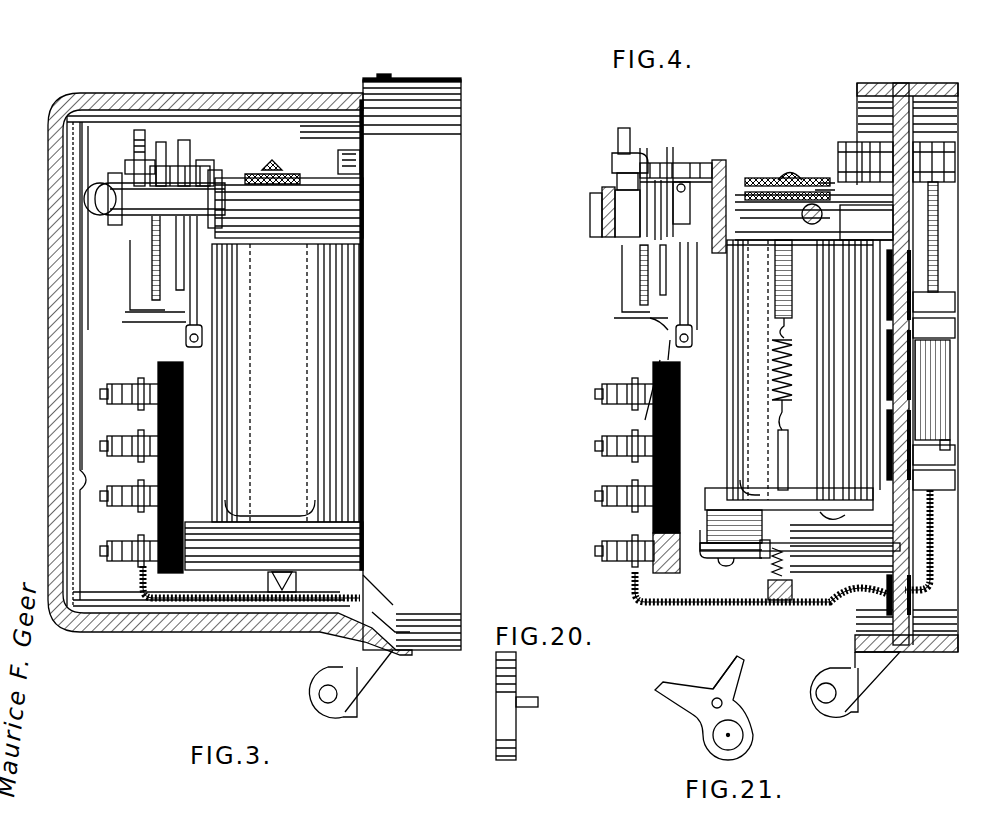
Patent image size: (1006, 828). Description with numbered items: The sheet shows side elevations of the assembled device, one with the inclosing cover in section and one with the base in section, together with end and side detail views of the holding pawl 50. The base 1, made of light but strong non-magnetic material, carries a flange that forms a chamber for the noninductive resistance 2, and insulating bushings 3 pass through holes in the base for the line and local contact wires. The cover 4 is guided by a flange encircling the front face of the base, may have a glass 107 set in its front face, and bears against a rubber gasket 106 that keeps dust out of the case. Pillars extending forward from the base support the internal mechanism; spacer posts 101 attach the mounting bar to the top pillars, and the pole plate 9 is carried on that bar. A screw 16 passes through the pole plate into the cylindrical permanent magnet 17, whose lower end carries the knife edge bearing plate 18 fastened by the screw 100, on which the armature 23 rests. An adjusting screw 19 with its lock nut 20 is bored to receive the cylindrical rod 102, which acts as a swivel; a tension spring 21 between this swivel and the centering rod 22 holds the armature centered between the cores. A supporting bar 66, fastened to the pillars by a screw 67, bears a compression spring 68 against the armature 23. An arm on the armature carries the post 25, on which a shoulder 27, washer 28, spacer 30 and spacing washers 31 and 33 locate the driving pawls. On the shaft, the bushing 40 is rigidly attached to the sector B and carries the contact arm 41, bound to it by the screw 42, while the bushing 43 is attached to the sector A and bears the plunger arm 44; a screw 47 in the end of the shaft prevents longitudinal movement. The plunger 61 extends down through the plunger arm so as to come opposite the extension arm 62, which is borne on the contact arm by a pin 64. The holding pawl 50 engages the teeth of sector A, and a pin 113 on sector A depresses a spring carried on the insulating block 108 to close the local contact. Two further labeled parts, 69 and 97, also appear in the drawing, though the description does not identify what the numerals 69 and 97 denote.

In FIG. 3, the base 1 is at (456, 452).
In FIG. 4, the base 1 is at (958, 282).
In FIG. 4, the noninductive resistance 2 is at (955, 443).
In FIG. 4, the insulating bushings 3 is at (890, 475).
In FIG. 3, the cover 4 is at (160, 628).
In FIG. 4, the pole plate 9 is at (738, 220).
In FIG. 4, the screw 16 is at (825, 185).
In FIG. 4, the cylindrical permanent magnet 17 is at (800, 370).
In FIG. 4, the knife edge bearing plate 18 is at (789, 497).
In FIG. 4, the adjusting screw 19 is at (768, 178).
In FIG. 4, the lock nut 20 is at (745, 190).
In FIG. 4, the tension spring 21 is at (772, 380).
In FIG. 4, the centering rod 22 is at (778, 448).
In FIG. 4, the armature 23 is at (762, 560).
In FIG. 3, the post 25 is at (135, 177).
In FIG. 3, the shoulder 27 is at (262, 170).
In FIG. 3, the washer 28 is at (205, 168).
In FIG. 3, the spacer 30 is at (192, 170).
In FIG. 3, the spacing washer 31 is at (168, 172).
In FIG. 3, the spacing washer 33 is at (160, 170).
In FIG. 4, the bushing 40 is at (696, 283).
In FIG. 4, the contact arm 41 is at (690, 328).
In FIG. 4, the screw 42 is at (690, 182).
In FIG. 4, the bushing 43 is at (658, 314).
In FIG. 4, the plunger arm 44 is at (650, 165).
In FIG. 4, the screw 47 is at (622, 240).
In FIG. 20, the holding pawl 50 is at (496, 668).
In FIG. 21, the holding pawl 50 is at (704, 728).
In FIG. 4, the plunger 61 is at (620, 288).
In FIG. 4, the extension arm 62 is at (668, 355).
In FIG. 4, the pin 64 is at (690, 345).
In FIG. 4, the supporting bar 66 is at (786, 570).
In FIG. 4, the screw 67 is at (780, 600).
In FIG. 4, the compression spring 68 is at (795, 555).
In FIG. 4, the terminal block 69 is at (666, 565).
In FIG. 4, the contact strip 97 is at (652, 411).
In FIG. 4, the screw 100 is at (900, 520).
In FIG. 4, the spacer posts 101 is at (728, 567).
In FIG. 4, the cylindrical rod 102 is at (806, 158).
In FIG. 3, the rubber gasket 106 is at (392, 655).
In FIG. 4, the rubber gasket 106 is at (860, 105).
In FIG. 3, the glass 107 is at (72, 222).
In FIG. 3, the insulating block 108 is at (140, 240).
In FIG. 3, the pin 113 is at (130, 160).
In FIG. 4, the sector A is at (620, 145).
In FIG. 3, the sector B is at (185, 168).
In FIG. 4, the sector B is at (672, 160).